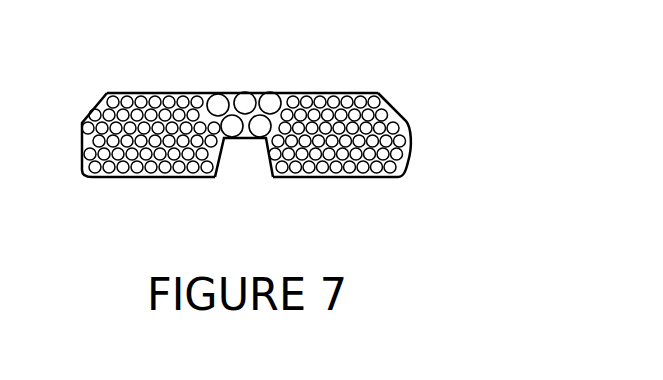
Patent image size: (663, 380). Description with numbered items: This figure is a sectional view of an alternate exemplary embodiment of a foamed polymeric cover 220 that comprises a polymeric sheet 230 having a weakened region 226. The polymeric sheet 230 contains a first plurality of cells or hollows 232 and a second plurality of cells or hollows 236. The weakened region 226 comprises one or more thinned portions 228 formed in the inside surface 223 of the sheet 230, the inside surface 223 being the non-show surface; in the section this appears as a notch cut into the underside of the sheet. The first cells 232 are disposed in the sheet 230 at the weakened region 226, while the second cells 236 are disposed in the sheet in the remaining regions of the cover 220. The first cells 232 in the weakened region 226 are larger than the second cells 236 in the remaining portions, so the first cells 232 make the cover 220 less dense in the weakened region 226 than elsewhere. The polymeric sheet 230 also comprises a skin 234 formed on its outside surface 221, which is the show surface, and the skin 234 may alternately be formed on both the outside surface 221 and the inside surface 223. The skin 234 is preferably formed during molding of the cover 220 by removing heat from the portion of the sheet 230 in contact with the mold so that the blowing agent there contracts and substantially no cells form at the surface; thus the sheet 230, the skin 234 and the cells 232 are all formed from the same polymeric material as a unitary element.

The foamed polymeric cover 220 is at (473, 125).
The outside surface 221 is at (190, 92).
The inside surface 223 is at (372, 178).
The weakened region 226 is at (237, 176).
The thinned portion 228 is at (278, 92).
The polymeric sheet 230 is at (398, 104).
The first plurality of cells 232 is at (245, 92).
The skin 234 is at (125, 92).
The second plurality of cells 236 is at (403, 156).